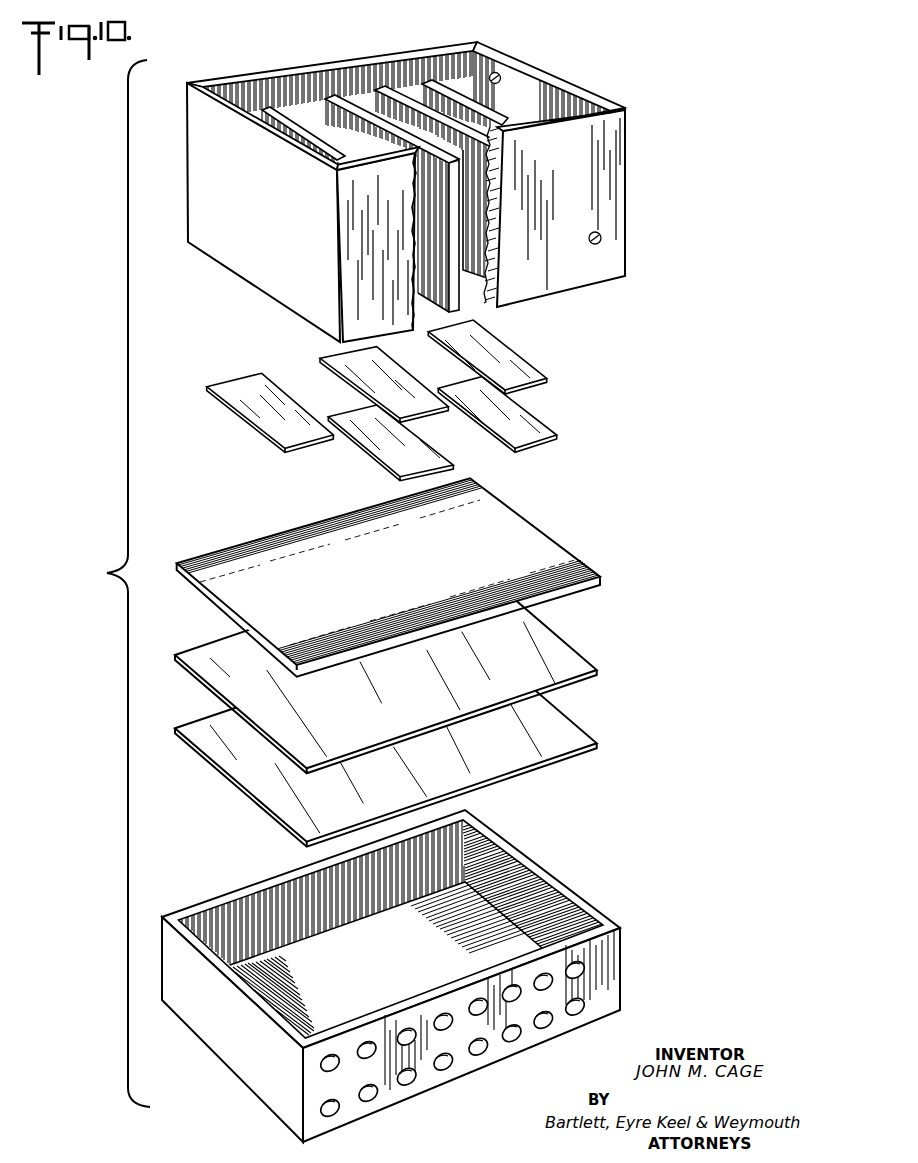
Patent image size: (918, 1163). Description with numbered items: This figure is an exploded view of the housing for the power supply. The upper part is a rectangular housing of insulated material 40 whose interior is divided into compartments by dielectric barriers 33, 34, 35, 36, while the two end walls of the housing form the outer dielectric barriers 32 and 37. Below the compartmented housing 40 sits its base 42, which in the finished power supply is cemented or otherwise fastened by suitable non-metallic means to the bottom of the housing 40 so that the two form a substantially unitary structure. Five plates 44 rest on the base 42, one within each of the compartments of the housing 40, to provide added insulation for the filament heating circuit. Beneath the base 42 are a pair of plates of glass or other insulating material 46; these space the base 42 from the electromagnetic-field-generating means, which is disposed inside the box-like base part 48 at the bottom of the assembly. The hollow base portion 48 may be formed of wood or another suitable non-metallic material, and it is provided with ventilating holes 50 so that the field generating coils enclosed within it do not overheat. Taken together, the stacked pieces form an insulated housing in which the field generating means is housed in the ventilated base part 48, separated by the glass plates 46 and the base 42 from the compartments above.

The dielectric barrier 32 is at (227, 260).
The dielectric barrier 33 is at (270, 102).
The dielectric barrier 34 is at (335, 95).
The dielectric barrier 35 is at (387, 88).
The dielectric barrier 36 is at (433, 80).
The dielectric barrier 37 is at (555, 82).
The housing of insulated material 40 is at (632, 175).
The base 42 is at (578, 570).
The plates 44 is at (262, 425).
The plates of glass or other insulating material 46 is at (575, 660).
The box-like base part 48 is at (567, 897).
The ventilating holes 50 is at (578, 985).